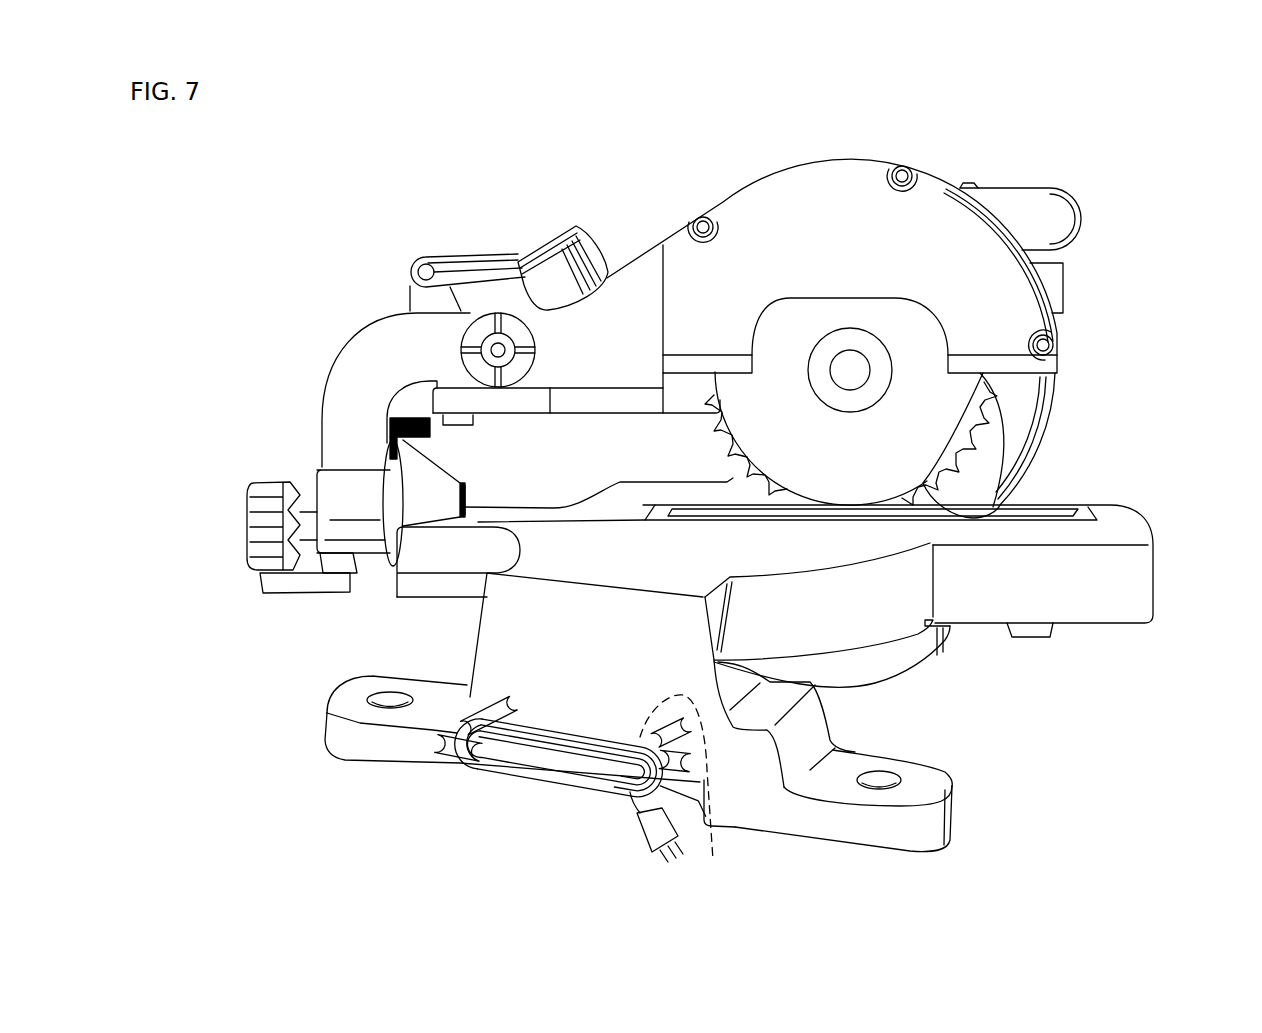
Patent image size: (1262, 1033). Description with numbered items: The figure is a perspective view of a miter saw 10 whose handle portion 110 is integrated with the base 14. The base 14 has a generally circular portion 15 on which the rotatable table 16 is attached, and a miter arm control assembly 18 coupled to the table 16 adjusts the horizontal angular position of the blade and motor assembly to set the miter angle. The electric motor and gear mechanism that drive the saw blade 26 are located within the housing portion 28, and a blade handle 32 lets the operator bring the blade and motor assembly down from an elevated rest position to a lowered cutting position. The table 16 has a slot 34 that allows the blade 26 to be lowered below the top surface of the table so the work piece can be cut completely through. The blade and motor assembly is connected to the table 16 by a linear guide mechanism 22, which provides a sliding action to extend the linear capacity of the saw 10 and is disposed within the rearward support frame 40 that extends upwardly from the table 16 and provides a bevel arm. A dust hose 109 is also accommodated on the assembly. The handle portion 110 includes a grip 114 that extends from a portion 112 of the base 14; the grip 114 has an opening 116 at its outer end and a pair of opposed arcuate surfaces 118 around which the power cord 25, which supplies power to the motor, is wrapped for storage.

The miter saw 10 is at (1138, 103).
The base 14 is at (952, 818).
The generally circular portion 15 is at (935, 664).
The rotatable table 16 is at (1138, 525).
The miter arm control assembly 18 is at (316, 481).
The linear guide mechanism 22 is at (624, 230).
The power cord 25 is at (490, 747).
The saw blade 26 is at (1000, 432).
The housing portion 28 is at (852, 157).
The blade handle 32 is at (1020, 191).
The slot 34 is at (1060, 513).
The rearward support frame 40 is at (370, 333).
The dust hose 109 is at (553, 242).
The handle portion 110 is at (414, 743).
The portion of the base 112 is at (507, 700).
The grip 114 is at (532, 780).
The opening 116 is at (712, 852).
The opposed arcuate surfaces 118 is at (443, 750).